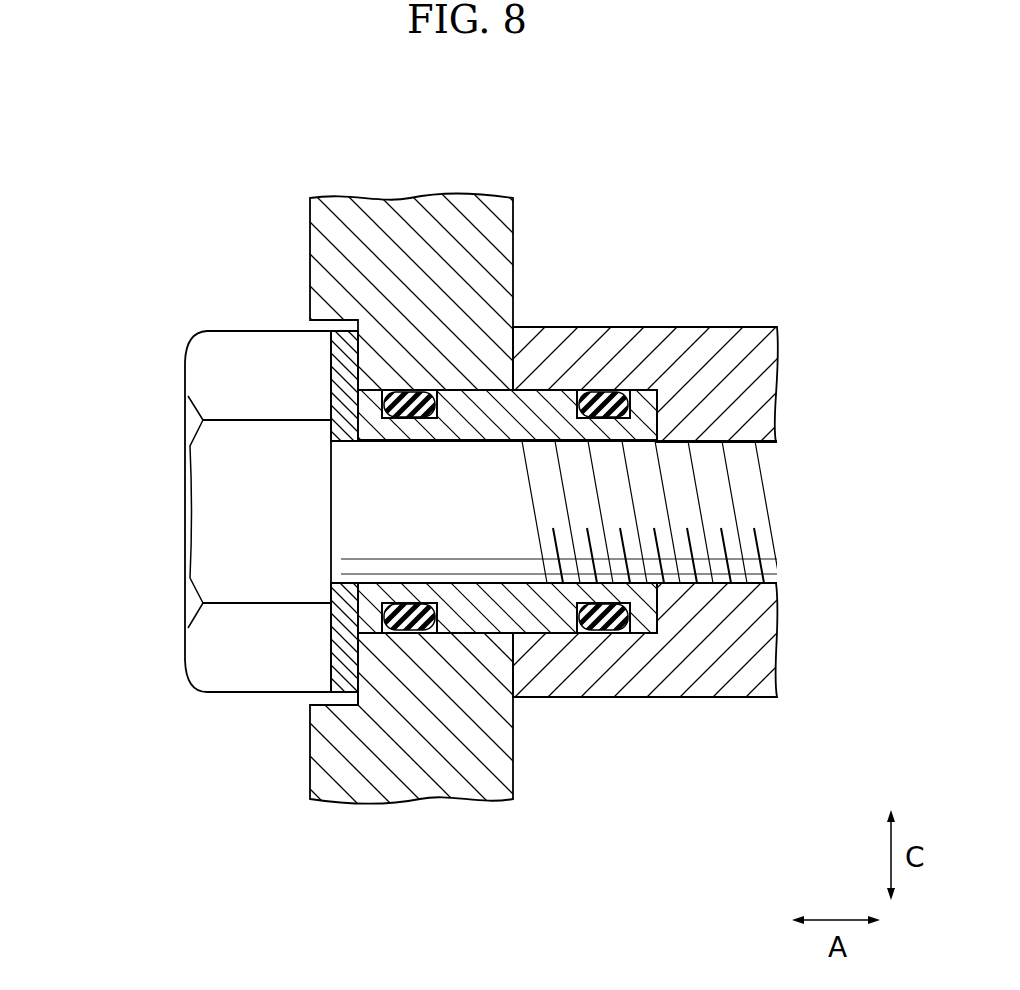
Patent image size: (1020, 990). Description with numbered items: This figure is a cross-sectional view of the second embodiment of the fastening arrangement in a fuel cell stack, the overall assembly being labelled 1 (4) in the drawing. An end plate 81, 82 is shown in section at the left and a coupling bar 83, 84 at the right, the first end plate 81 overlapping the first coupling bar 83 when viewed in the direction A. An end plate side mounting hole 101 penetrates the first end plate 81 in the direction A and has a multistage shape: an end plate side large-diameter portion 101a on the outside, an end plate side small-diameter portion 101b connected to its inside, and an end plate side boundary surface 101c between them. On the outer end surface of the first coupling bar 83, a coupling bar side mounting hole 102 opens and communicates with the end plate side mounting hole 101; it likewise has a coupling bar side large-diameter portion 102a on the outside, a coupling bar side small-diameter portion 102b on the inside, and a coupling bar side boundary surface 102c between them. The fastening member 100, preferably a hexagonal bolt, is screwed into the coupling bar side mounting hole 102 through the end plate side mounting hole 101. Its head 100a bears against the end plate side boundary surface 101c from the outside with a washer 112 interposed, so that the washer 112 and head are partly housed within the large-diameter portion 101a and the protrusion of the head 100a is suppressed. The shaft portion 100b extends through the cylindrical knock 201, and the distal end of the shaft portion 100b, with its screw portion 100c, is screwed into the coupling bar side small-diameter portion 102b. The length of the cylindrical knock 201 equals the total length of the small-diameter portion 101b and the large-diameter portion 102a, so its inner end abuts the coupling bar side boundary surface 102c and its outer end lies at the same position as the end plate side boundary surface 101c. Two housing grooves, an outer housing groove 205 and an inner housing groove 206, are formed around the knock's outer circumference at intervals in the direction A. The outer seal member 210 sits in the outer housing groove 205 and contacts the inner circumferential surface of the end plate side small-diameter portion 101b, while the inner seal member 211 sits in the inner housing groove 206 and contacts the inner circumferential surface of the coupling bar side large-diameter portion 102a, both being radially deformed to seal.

The joint structure 1 is at (150, 250).
The pipe connection 4 is at (475, 494).
The first end plate 81 is at (305, 220).
The second housing wall 82 is at (411, 499).
The first coupling bar 83 is at (765, 631).
The second housing body 84 is at (645, 512).
The fastening member 100 is at (185, 336).
The head 100a is at (186, 443).
The shaft portion 100b is at (498, 460).
The screw portion 100c is at (770, 485).
The end plate side mounting hole 101 is at (83, 515).
The end plate side large-diameter portion 101a is at (330, 695).
The end plate side small-diameter portion 101b is at (453, 632).
The end plate side boundary surface 101c is at (352, 652).
The coupling bar side mounting hole 102 is at (762, 837).
The coupling bar side large-diameter portion 102a is at (543, 633).
The coupling bar side small-diameter portion 102b is at (718, 580).
The coupling bar side boundary surface 102c is at (652, 612).
The washer 112 is at (332, 368).
The cylindrical knock 201 is at (485, 378).
The outer housing groove 205 is at (427, 413).
The inner housing groove 206 is at (625, 403).
The outer seal member 210 is at (387, 396).
The inner seal member 211 is at (588, 392).